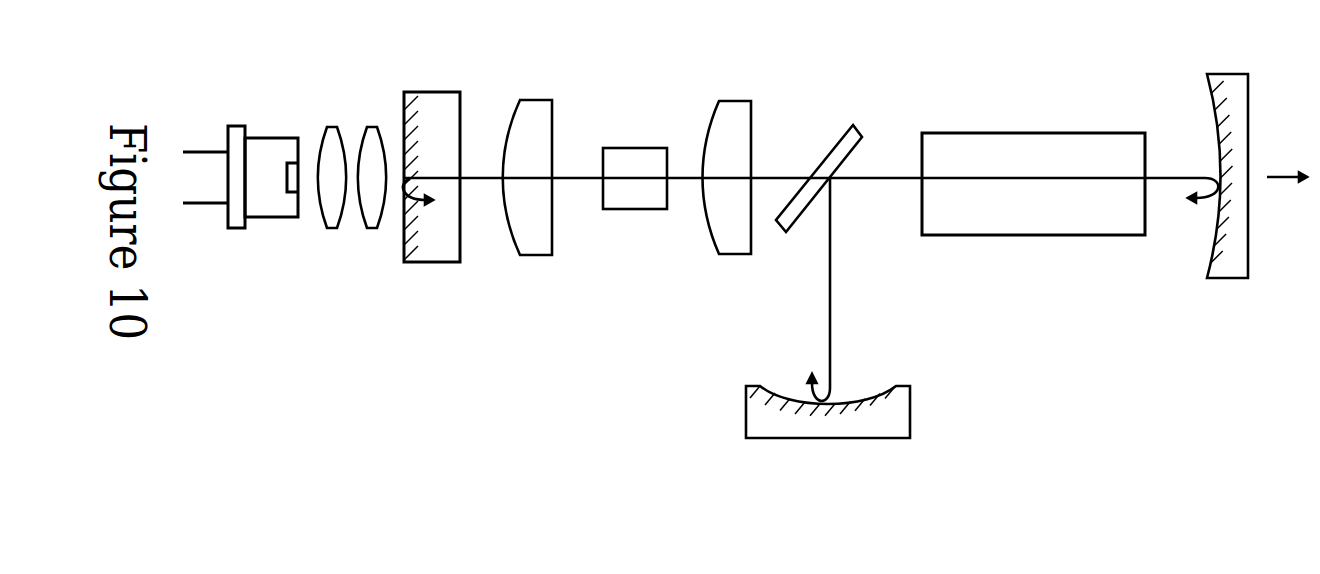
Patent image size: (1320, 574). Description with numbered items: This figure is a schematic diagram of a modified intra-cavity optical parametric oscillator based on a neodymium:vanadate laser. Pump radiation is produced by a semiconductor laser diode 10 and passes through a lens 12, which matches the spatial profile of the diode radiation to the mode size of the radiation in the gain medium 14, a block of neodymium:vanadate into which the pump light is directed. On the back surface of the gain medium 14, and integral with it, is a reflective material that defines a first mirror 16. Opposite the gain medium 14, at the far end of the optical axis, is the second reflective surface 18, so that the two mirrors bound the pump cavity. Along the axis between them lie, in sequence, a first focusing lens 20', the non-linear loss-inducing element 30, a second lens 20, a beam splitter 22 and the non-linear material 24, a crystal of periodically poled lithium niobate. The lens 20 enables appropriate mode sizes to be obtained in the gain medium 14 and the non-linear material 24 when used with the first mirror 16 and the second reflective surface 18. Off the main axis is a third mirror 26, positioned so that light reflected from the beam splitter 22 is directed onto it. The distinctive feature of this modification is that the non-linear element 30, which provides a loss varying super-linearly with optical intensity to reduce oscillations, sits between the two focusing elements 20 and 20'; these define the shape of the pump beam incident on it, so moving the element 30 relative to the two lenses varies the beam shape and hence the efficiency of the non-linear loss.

The semiconductor laser diode 10 is at (240, 198).
The lens 12 is at (352, 199).
The gain medium 14 is at (432, 155).
The first mirror 16 is at (391, 94).
The second reflective surface 18 is at (1227, 199).
The lens 20 is at (728, 155).
The focusing element 20' is at (531, 154).
The beam splitter 22 is at (820, 158).
The non-linear material 24 is at (1033, 164).
The third mirror 26 is at (850, 412).
The non-linear loss-inducing element 30 is at (635, 157).